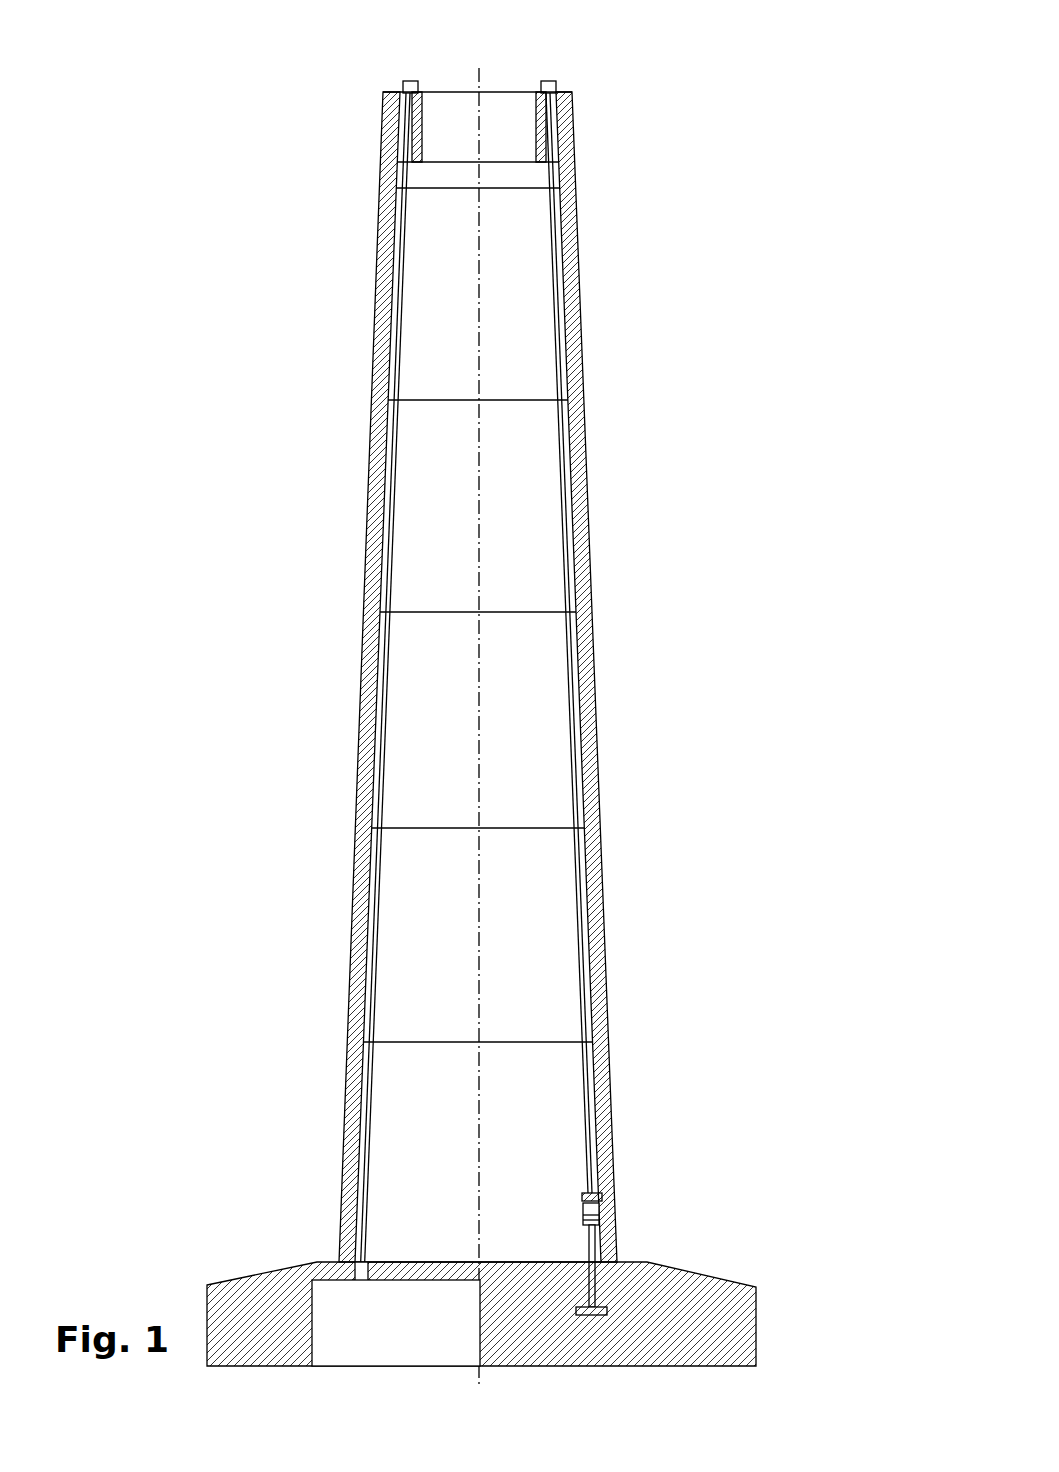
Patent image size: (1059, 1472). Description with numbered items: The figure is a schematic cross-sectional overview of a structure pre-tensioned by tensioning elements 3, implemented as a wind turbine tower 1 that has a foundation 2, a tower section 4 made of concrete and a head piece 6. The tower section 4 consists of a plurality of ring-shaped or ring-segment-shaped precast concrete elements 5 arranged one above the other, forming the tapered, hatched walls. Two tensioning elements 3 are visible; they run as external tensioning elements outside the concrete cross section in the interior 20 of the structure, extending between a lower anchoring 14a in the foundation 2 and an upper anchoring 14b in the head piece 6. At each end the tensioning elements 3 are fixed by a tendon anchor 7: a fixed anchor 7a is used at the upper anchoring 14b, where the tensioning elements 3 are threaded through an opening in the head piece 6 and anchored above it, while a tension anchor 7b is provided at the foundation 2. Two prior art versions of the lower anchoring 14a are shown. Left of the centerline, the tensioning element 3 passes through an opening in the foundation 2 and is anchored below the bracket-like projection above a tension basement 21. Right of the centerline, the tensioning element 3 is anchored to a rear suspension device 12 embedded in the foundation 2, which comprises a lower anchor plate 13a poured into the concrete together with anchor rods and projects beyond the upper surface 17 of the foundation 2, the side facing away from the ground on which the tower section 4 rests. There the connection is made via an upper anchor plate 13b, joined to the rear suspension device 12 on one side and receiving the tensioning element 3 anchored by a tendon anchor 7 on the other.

The wind turbine tower 1 is at (662, 365).
The foundation 2 is at (538, 1264).
The tensioning element 3 is at (475, 686).
The tower section 4 is at (200, 1262).
The precast concrete element 5 is at (516, 677).
The head piece 6 is at (414, 170).
The tendon anchor 7 is at (532, 665).
The fixed anchor 7a is at (465, 93).
The tension anchor 7b is at (532, 1172).
The rear suspension device 12 is at (587, 1243).
The lower anchor plate 13a is at (713, 1266).
The upper anchor plate 13b is at (556, 1129).
The lower anchoring 14a is at (348, 1285).
The upper anchoring 14b is at (387, 91).
The upper surface of the foundation 17 is at (627, 1260).
The interior 20 is at (470, 556).
The tension basement 21 is at (372, 1348).